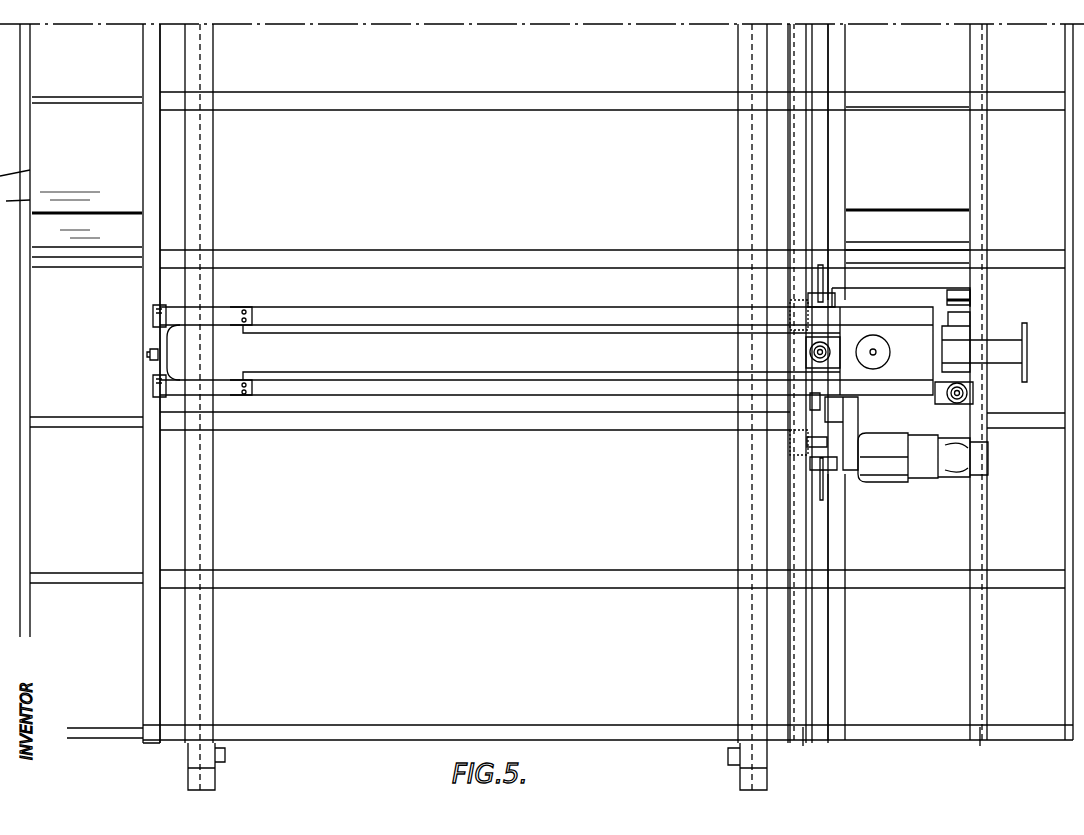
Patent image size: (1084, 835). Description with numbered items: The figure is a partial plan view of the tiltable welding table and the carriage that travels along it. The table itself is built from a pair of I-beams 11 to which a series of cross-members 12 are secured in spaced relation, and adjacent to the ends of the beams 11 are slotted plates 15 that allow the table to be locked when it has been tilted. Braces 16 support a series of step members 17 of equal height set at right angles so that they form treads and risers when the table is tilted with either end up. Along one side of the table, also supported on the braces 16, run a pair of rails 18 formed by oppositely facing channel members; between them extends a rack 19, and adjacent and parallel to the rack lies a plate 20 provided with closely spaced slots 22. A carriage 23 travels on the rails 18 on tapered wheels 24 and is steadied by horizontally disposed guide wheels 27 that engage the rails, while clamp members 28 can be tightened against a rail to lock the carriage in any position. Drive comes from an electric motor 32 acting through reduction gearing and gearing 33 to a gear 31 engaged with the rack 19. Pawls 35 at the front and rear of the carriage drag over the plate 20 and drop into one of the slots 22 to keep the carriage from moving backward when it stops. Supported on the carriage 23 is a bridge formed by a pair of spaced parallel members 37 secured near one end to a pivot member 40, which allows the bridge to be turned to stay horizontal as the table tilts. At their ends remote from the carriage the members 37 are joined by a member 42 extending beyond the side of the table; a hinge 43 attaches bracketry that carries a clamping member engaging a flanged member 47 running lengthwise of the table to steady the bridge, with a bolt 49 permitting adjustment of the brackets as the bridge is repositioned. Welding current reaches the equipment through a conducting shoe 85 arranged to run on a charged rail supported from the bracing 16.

The I-beams 11 is at (100, 46).
The cross-members 12 is at (520, 92).
The slotted plates 15 is at (225, 767).
The braces 16 is at (92, 265).
The step members 17 is at (960, 158).
The rails 18 is at (895, 751).
The rack 19 is at (845, 681).
The plate 20 is at (822, 76).
The slots 22 is at (824, 522).
The carriage 23 is at (925, 291).
The wheels 24 is at (975, 288).
The guide wheels 27 is at (987, 329).
The clamp members 28 is at (805, 355).
The gear 31 is at (827, 442).
The electric motor 32 is at (923, 481).
The gearing 33 is at (853, 431).
The pawls 35 is at (823, 286).
The parallel members 37 is at (620, 324).
The pivot member 40 is at (880, 353).
The member 42 is at (235, 312).
The hinge 43 is at (152, 319).
The flanged member 47 is at (150, 660).
The bolt 49 is at (147, 354).
The conducting shoe 85 is at (1027, 351).